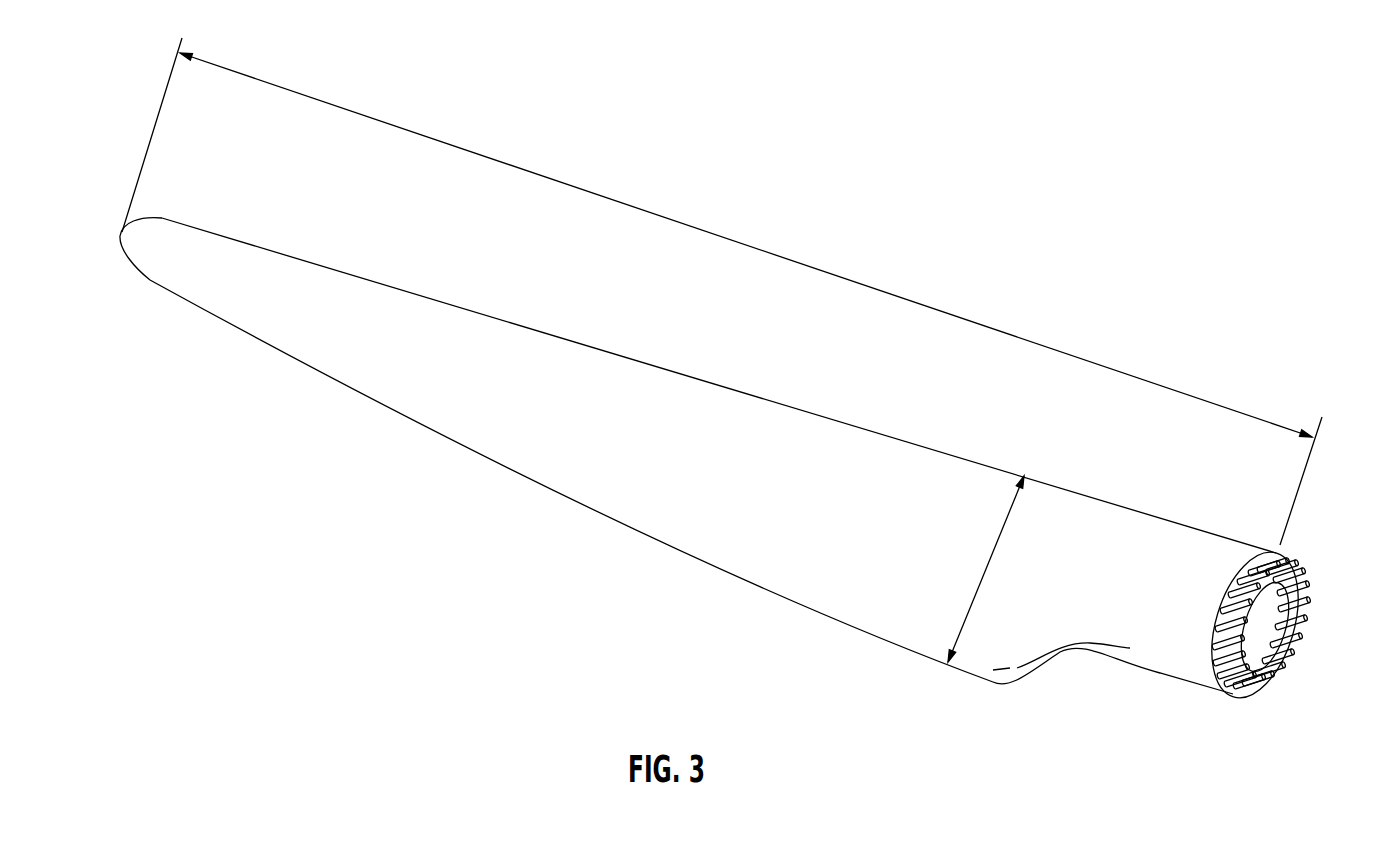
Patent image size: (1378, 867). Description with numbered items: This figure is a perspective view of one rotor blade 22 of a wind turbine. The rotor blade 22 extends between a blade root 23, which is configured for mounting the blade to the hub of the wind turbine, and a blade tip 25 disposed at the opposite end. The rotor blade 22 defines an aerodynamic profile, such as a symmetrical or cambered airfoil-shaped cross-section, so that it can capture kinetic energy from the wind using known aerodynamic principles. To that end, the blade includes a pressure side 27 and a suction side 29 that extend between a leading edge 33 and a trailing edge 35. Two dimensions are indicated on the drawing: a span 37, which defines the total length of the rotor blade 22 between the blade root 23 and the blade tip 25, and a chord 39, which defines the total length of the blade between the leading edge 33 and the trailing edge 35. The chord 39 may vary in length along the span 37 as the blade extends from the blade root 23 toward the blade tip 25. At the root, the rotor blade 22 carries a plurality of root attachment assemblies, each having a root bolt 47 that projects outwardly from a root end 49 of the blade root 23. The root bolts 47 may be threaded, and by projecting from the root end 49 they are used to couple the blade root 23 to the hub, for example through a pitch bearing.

The rotor blade 22 is at (1115, 318).
The blade root 23 is at (1162, 673).
The blade tip 25 is at (118, 236).
The pressure side 27 is at (738, 533).
The suction side 29 is at (570, 358).
The leading edge 33 is at (812, 412).
The trailing edge 35 is at (555, 488).
The span 37 is at (756, 248).
The chord 39 is at (1005, 528).
The root bolt 47 is at (1323, 607).
The root end 49 is at (1235, 693).